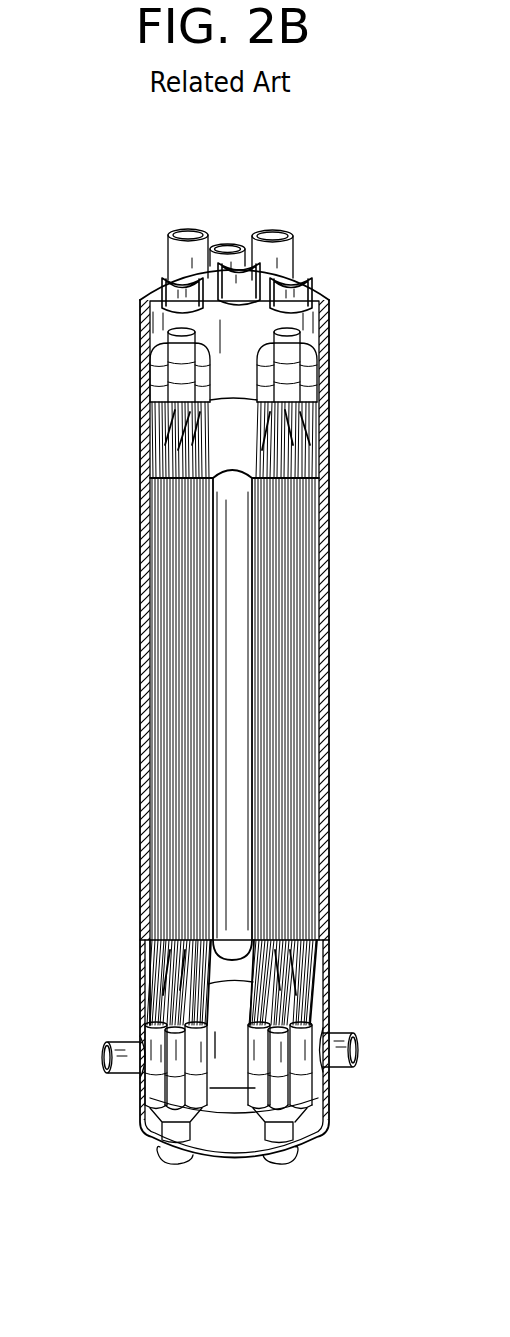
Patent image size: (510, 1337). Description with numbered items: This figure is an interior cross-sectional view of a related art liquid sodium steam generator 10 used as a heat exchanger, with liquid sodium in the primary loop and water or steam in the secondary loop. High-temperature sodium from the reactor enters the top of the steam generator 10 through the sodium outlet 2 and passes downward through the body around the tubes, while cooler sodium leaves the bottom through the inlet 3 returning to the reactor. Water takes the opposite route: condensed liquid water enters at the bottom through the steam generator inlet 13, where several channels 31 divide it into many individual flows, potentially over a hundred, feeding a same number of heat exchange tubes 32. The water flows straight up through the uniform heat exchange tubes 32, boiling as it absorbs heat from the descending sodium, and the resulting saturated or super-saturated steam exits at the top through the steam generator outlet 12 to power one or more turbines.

The steam generator 10 is at (387, 710).
The sodium outlet 2 is at (150, 297).
The steam generator outlet 12 is at (303, 277).
The heat exchange tubes 32 is at (172, 648).
The channels 31 is at (160, 968).
The inlet 3 is at (122, 1065).
The steam generator inlet 13 is at (176, 1165).